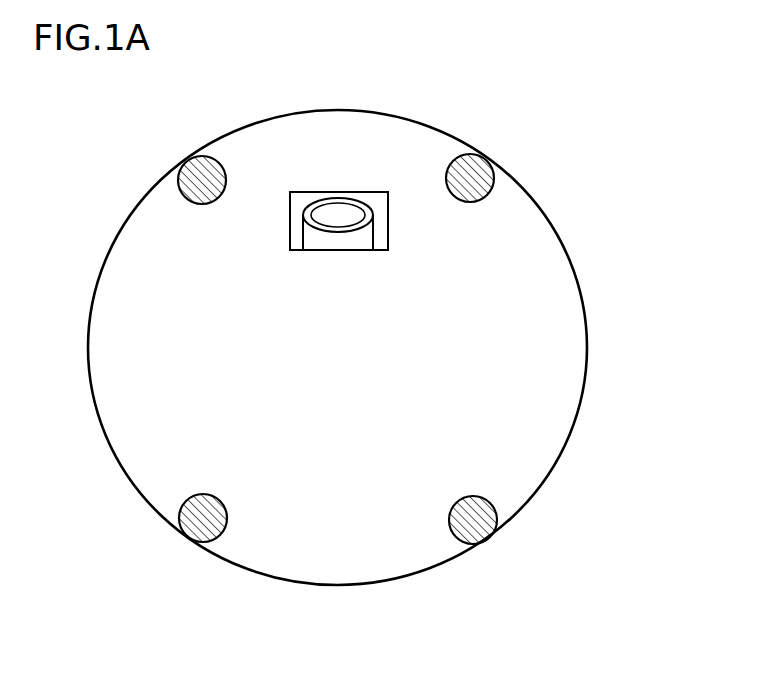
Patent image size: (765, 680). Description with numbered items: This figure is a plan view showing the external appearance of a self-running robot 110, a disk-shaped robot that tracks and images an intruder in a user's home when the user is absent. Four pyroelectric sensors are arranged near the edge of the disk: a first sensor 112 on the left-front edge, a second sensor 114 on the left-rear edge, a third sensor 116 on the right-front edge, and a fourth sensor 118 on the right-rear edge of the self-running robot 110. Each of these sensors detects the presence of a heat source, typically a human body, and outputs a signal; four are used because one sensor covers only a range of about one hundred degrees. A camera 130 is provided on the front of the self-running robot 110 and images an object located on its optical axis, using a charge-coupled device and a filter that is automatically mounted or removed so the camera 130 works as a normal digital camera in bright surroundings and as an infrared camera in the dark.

The self-running robot 110 is at (587, 322).
The first sensor 112 is at (487, 155).
The second sensor 114 is at (490, 540).
The third sensor 116 is at (182, 167).
The fourth sensor 118 is at (182, 537).
The camera 130 is at (362, 197).